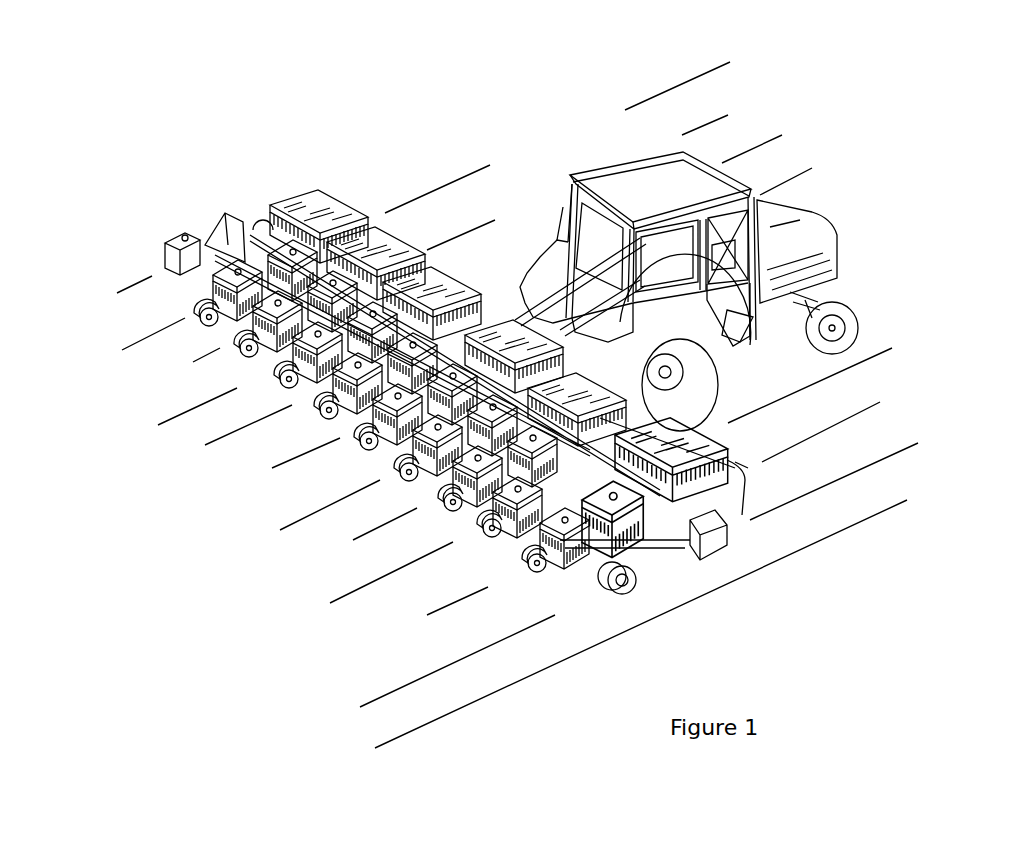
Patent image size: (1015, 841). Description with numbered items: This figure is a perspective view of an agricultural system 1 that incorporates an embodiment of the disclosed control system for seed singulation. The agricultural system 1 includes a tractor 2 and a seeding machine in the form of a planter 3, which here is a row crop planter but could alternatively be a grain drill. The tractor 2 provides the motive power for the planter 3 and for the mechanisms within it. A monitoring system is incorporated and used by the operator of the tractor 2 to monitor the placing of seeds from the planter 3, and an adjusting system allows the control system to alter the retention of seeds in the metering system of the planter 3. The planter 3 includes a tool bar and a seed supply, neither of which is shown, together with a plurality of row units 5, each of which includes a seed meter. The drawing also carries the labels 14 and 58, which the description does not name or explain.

The agricultural system 1 is at (444, 98).
The tractor 2 is at (929, 222).
The planter 3 is at (195, 153).
The row units 5 is at (402, 537).
The controller in tractor cab 14 is at (757, 205).
The seed hopper 58 is at (482, 315).